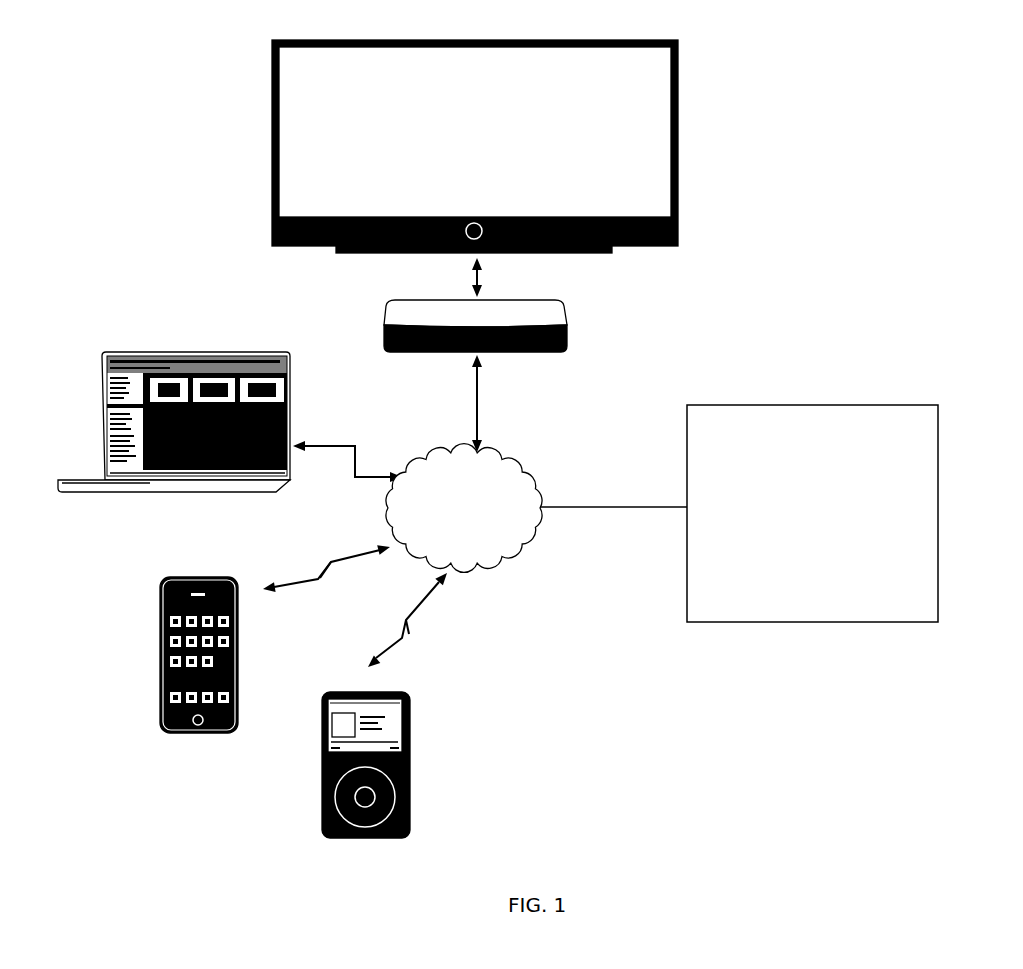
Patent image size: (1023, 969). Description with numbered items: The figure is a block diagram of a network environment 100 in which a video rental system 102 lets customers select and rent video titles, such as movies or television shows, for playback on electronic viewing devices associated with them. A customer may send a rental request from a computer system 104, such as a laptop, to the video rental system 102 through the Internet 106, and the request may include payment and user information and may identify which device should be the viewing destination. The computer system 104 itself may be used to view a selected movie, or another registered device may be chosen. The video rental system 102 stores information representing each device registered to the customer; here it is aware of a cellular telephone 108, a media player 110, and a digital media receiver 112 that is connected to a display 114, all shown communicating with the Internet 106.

The network environment 100 is at (105, 87).
The video rental system 102 is at (938, 508).
The computer system 104 is at (290, 373).
The Internet 106 is at (530, 537).
The cellular telephone 108 is at (160, 623).
The media player 110 is at (408, 758).
The digital media receiver 112 is at (567, 322).
The display 114 is at (678, 115).